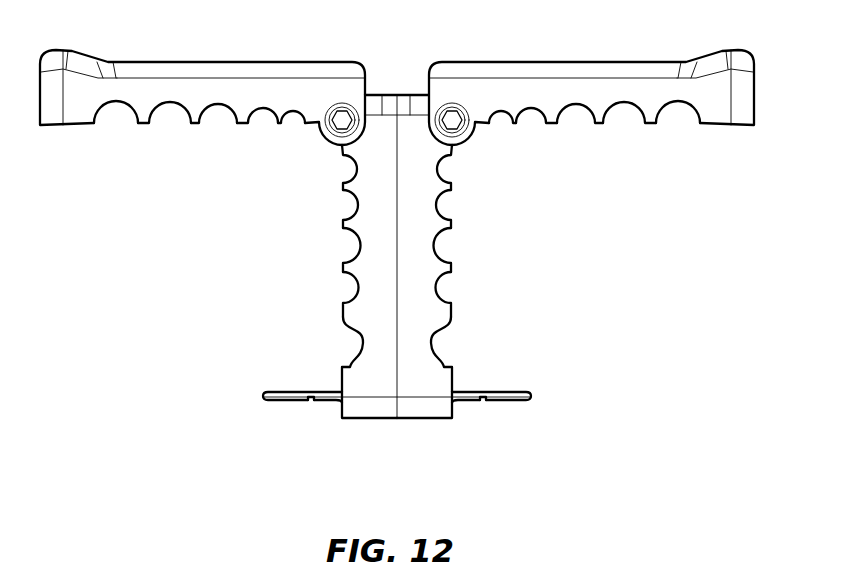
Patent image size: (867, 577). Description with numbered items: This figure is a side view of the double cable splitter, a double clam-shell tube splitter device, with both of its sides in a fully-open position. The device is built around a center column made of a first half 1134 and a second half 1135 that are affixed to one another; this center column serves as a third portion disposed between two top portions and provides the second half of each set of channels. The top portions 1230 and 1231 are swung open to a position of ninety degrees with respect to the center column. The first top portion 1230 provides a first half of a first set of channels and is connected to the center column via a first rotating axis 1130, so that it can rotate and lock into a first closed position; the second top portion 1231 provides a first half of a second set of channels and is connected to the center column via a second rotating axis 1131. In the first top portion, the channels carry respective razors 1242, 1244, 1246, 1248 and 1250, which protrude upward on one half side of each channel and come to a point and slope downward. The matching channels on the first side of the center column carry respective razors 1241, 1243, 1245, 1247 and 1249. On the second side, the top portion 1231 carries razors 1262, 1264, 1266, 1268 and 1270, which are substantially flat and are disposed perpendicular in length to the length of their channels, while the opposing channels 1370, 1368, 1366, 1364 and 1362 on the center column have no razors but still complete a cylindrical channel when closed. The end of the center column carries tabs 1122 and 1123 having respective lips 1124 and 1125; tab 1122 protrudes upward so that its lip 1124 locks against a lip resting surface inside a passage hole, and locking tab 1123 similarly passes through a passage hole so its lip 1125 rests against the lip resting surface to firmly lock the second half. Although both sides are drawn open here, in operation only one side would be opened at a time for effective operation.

The top portion 1230 is at (177, 80).
The top portion 1231 is at (617, 80).
The first rotating axis 1130 is at (341, 118).
The second rotating axis 1131 is at (453, 118).
The razor 1242 is at (118, 105).
The razor 1244 is at (170, 106).
The razor 1246 is at (219, 108).
The razor 1248 is at (263, 112).
The razor 1250 is at (293, 113).
The razor 1262 is at (676, 105).
The razor 1264 is at (624, 106).
The razor 1266 is at (575, 108).
The razor 1268 is at (531, 112).
The razor 1270 is at (501, 113).
The razor 1241 is at (357, 344).
The razor 1243 is at (357, 290).
The razor 1245 is at (357, 247).
The razor 1247 is at (356, 208).
The razor 1249 is at (356, 171).
The channel 1362 is at (437, 344).
The channel 1364 is at (437, 290).
The channel 1366 is at (437, 247).
The channel 1368 is at (438, 208).
The channel 1370 is at (438, 171).
The tab 1122 is at (284, 394).
The locking tab 1123 is at (510, 394).
The lip 1124 is at (312, 401).
The lip 1125 is at (482, 401).
The first half of the center column 1134 is at (368, 419).
The second half of the center column 1135 is at (434, 419).